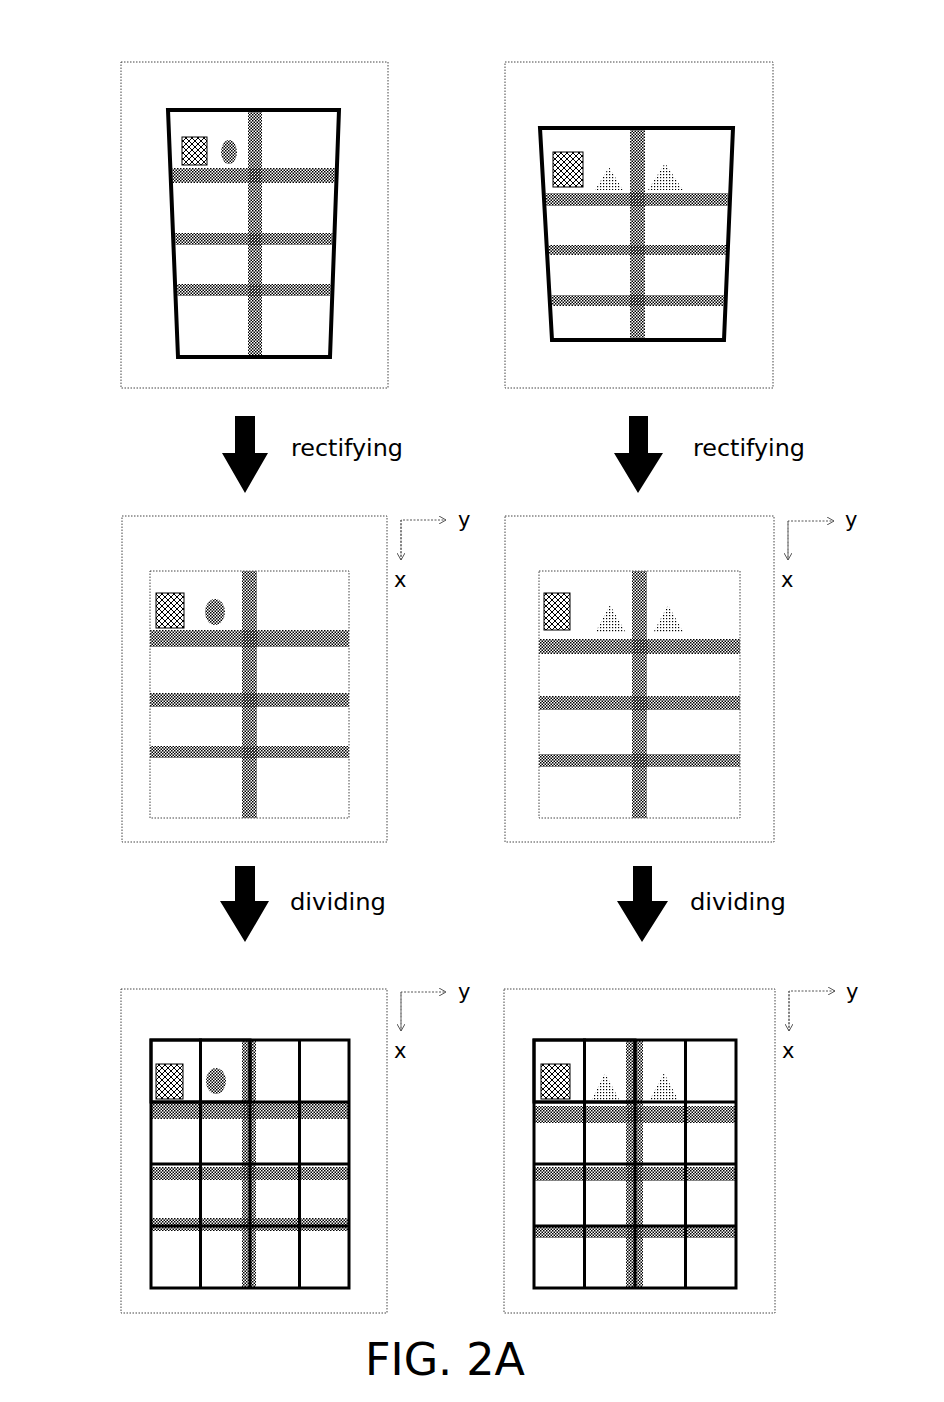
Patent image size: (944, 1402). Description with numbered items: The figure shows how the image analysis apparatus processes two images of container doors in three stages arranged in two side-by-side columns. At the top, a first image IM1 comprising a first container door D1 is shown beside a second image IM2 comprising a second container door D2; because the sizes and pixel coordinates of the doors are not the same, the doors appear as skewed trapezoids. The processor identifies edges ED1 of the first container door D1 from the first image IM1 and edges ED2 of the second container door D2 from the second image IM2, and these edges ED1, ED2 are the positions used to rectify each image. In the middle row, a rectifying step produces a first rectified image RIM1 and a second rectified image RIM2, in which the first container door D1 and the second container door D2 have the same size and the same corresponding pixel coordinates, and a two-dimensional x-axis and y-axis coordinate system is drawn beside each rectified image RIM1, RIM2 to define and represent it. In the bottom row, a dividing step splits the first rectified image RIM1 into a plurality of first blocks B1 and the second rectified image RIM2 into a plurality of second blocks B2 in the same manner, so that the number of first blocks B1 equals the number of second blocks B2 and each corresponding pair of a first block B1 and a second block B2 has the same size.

The first image IM1 is at (373, 98).
The second image IM2 is at (760, 98).
The edges of the first container door ED1 is at (218, 108).
The edges of the second container door ED2 is at (595, 125).
The first container door D1 is at (146, 231).
The second container door D2 is at (526, 232).
The first rectified image RIM1 is at (373, 550).
The second rectified image RIM2 is at (761, 550).
The first blocks B1 is at (168, 1056).
The second blocks B2 is at (557, 1056).